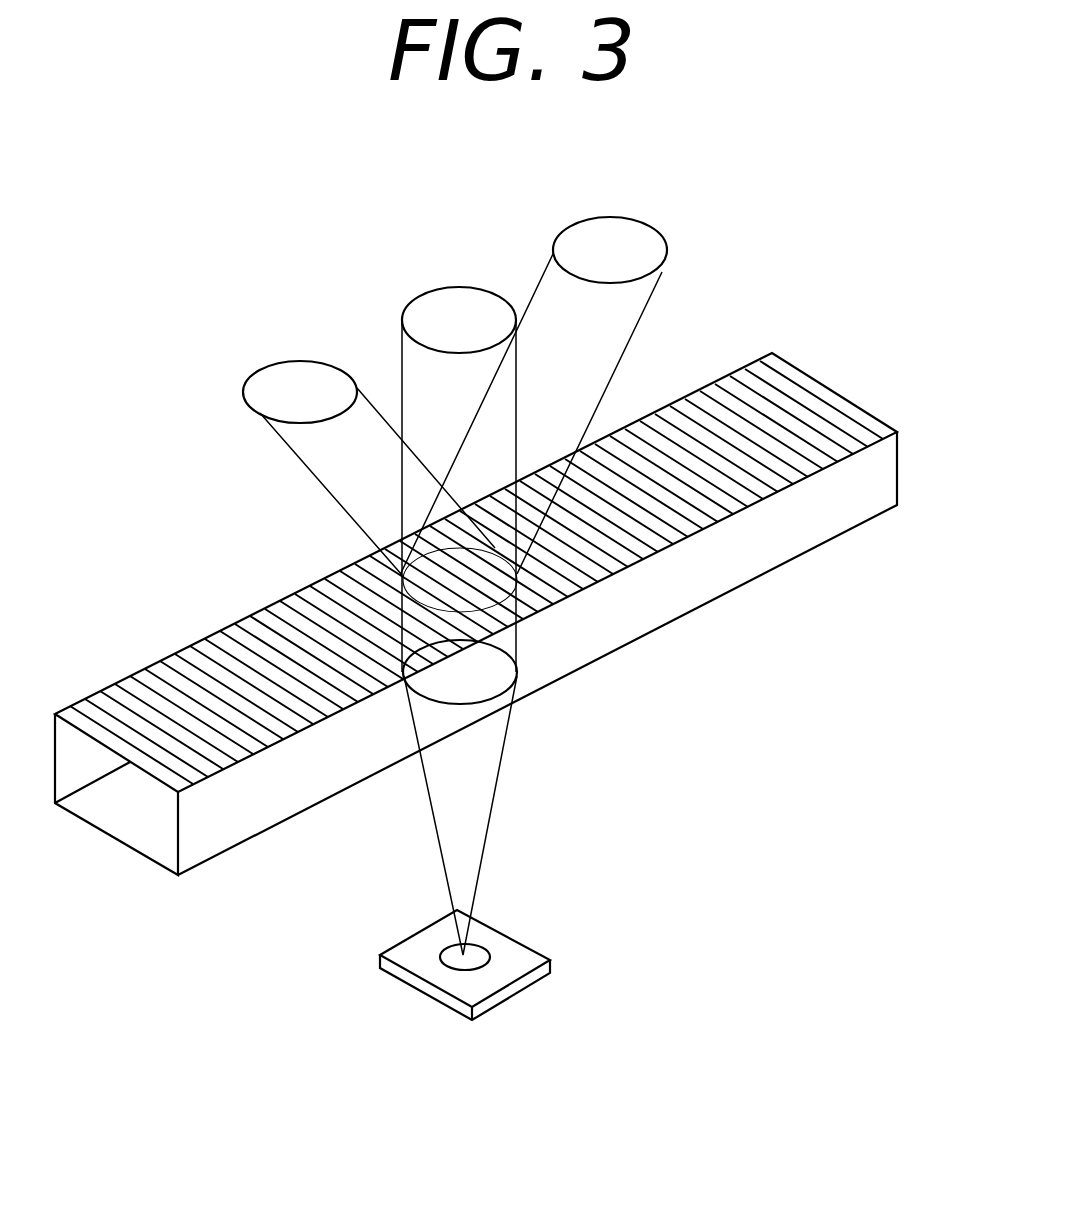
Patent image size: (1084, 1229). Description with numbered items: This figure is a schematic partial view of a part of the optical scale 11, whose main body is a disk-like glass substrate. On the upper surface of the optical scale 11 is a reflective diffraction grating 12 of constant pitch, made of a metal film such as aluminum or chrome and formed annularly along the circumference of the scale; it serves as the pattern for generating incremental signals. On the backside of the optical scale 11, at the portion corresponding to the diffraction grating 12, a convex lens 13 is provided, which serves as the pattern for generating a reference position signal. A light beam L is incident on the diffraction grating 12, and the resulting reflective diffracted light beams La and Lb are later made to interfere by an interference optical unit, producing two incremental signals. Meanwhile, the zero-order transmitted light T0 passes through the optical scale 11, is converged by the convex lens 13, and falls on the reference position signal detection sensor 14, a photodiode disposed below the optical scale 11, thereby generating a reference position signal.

The optical scale 11 is at (838, 388).
The reflective diffraction grating 12 is at (263, 650).
The convex lens 13 is at (485, 700).
The reference position signal detection sensor 14 is at (493, 972).
The light beam L is at (452, 313).
The reflective diffracted light beam La is at (295, 380).
The reflective diffracted light beam Lb is at (610, 240).
The 0-th order transmitted light T0 is at (470, 808).